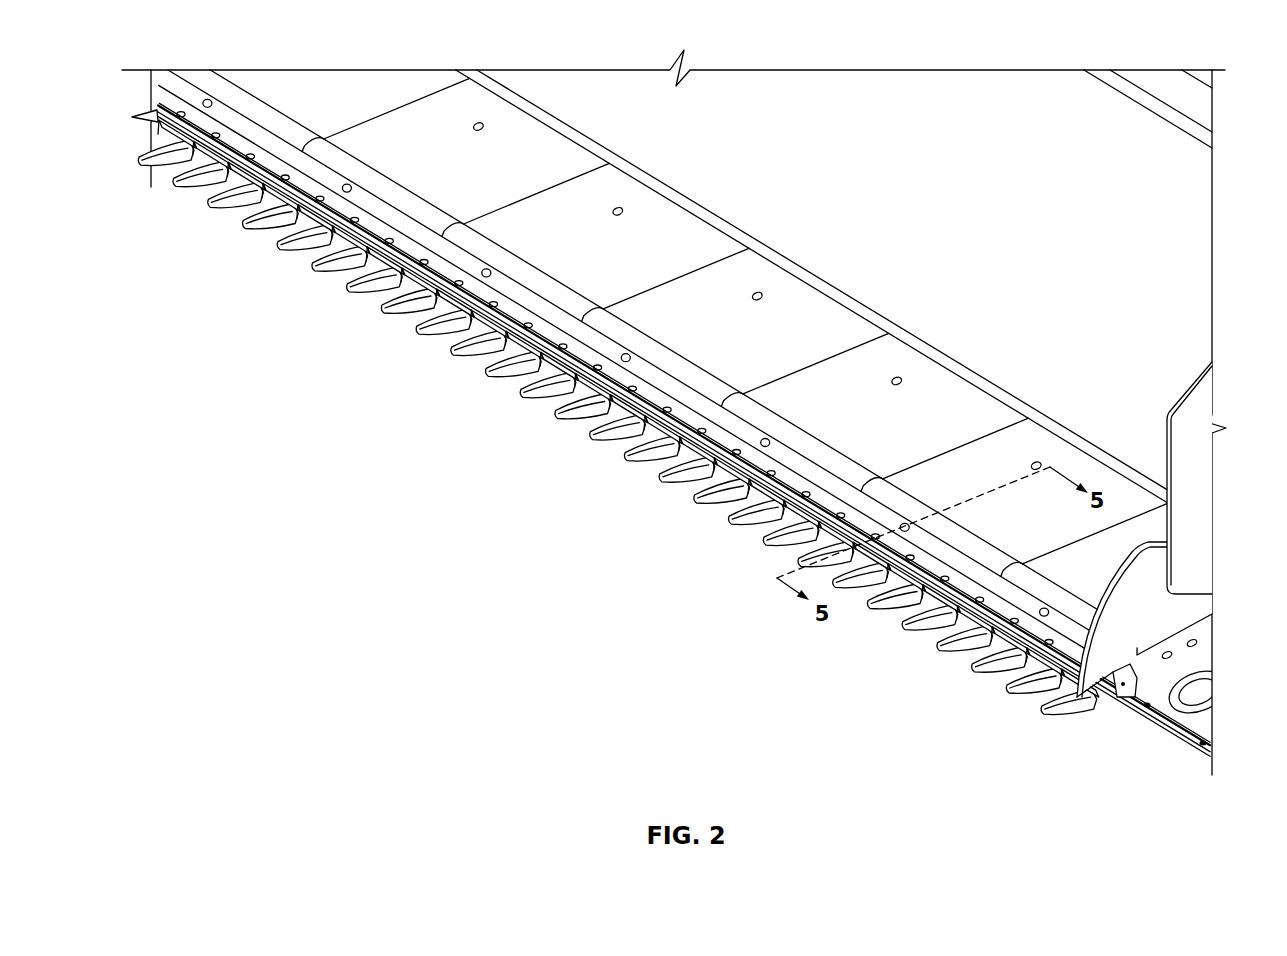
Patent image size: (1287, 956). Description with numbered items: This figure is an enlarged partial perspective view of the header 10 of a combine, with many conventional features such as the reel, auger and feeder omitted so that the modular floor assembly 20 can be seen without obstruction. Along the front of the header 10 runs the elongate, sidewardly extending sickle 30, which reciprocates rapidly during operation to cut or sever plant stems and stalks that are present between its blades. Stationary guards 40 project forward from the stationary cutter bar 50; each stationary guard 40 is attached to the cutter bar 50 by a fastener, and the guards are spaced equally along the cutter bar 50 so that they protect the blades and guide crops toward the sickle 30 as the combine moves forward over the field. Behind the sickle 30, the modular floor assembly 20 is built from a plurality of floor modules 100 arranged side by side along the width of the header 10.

The header 10 is at (671, 425).
The modular floor assembly 20 is at (788, 322).
The sickle 30 is at (403, 321).
The stationary guard 40 is at (1008, 693).
The cutter bar 50 is at (1124, 703).
The floor module 100 is at (645, 243).